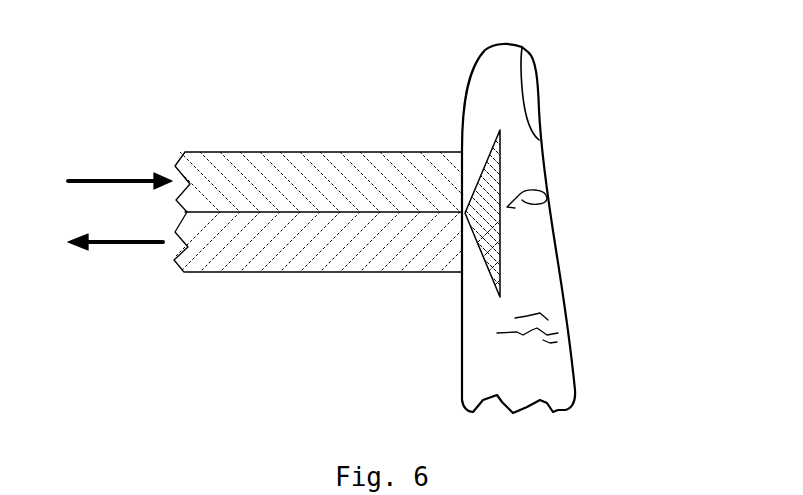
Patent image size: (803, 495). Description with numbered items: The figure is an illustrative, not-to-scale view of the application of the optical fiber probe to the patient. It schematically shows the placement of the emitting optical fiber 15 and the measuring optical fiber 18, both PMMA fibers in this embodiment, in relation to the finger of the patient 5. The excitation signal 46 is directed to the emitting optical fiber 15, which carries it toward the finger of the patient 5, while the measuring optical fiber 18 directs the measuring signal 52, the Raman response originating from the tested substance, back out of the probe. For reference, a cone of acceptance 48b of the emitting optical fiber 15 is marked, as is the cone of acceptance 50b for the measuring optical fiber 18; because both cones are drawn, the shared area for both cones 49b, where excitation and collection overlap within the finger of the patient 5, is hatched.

The finger of the patient 5 is at (568, 382).
The emitting optical fiber 15 is at (313, 185).
The measuring optical fiber 18 is at (310, 230).
The excitation signal 46 is at (115, 171).
The measuring signal 52 is at (118, 245).
The cone of acceptance of the emitting optical fiber 48b is at (500, 161).
The shared area for both cones 49b is at (500, 232).
The cone of acceptance for the measuring optical fiber 50b is at (500, 262).